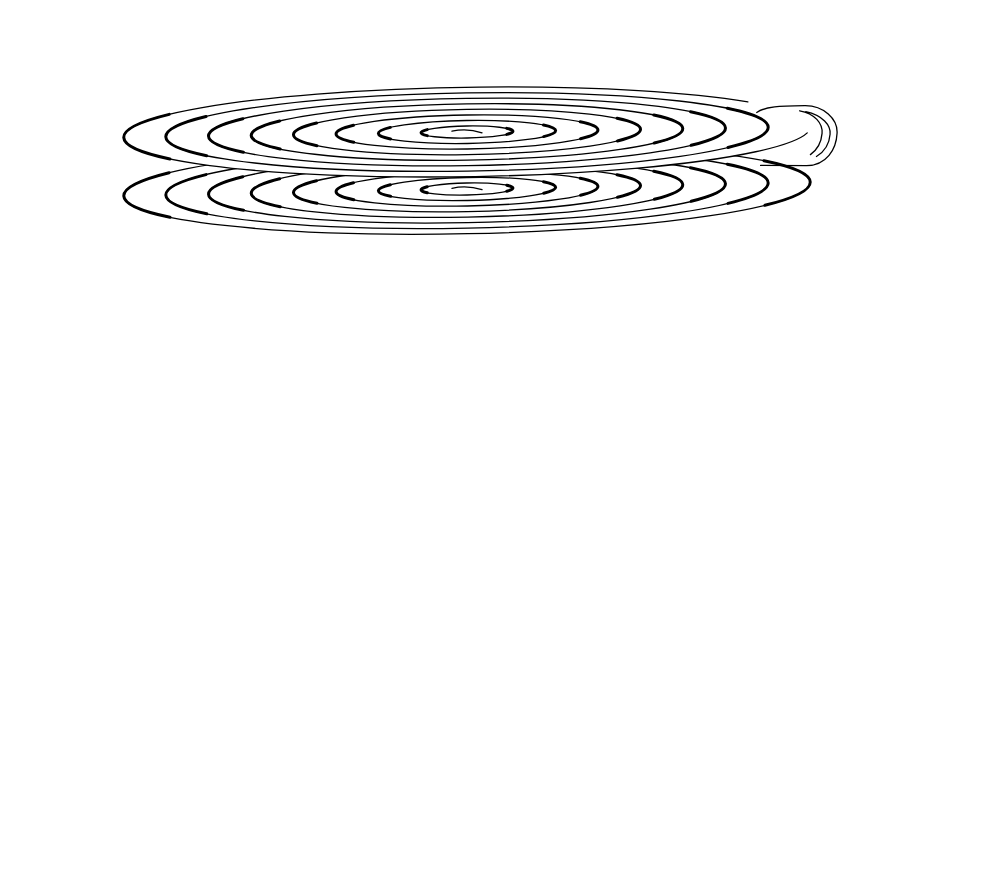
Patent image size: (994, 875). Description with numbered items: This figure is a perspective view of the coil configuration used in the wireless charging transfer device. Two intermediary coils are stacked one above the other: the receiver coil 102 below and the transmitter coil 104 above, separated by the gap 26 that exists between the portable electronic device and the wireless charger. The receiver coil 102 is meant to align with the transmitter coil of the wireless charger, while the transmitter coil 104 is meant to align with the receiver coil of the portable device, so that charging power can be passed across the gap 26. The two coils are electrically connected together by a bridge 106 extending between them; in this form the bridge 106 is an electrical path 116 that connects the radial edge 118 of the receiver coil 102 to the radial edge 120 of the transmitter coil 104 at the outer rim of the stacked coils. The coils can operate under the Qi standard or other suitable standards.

The gap 26 is at (147, 170).
The receiver coil 102 is at (487, 233).
The transmitter coil 104 is at (388, 90).
The bridge 106 is at (832, 122).
The electrical path 116 is at (830, 146).
The radial edge of receiver coil 118 is at (733, 212).
The radial edge of transmitter coil 120 is at (703, 97).